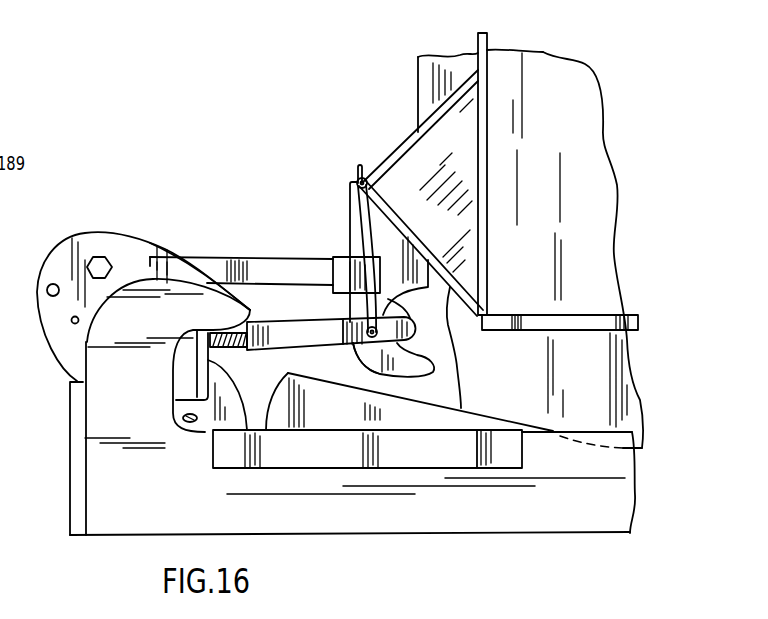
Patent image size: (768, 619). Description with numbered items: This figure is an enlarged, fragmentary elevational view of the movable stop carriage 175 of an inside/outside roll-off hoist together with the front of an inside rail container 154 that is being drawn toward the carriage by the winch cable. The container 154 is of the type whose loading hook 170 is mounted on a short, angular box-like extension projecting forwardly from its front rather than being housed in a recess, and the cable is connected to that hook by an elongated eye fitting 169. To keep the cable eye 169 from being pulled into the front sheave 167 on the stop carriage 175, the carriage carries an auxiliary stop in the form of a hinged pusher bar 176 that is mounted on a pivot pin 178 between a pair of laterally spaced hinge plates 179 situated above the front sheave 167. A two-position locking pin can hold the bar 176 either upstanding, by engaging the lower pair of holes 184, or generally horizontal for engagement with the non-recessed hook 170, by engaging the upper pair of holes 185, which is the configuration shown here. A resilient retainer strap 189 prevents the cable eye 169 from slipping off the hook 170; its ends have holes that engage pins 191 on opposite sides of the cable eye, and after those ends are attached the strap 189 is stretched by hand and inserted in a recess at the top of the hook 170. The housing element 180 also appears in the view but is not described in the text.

The inside rail container 154 is at (547, 49).
The front sheave 167 is at (207, 420).
The elongated eye fitting 169 is at (274, 334).
The loading hook 170 is at (406, 371).
The movable stop carriage 175 is at (66, 511).
The hinged bar 176 is at (262, 273).
The pivot pin 178 is at (106, 258).
The hinge plates 179 is at (150, 254).
The housing 180 is at (115, 402).
The lower pair of holes 184 is at (73, 325).
The upper pair of holes 185 is at (53, 284).
The resilient retainer strap 189 is at (362, 216).
The pins 191 is at (352, 366).